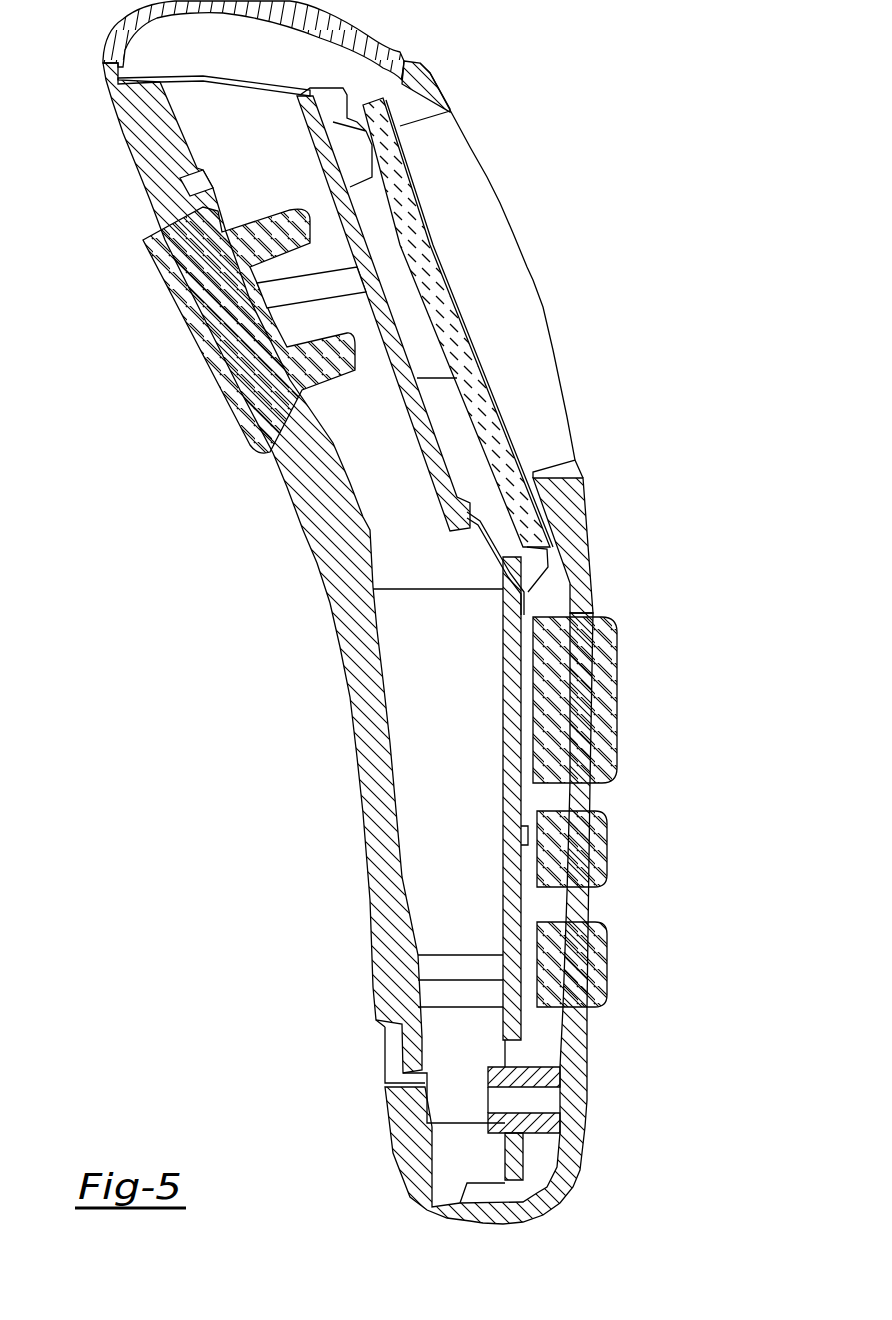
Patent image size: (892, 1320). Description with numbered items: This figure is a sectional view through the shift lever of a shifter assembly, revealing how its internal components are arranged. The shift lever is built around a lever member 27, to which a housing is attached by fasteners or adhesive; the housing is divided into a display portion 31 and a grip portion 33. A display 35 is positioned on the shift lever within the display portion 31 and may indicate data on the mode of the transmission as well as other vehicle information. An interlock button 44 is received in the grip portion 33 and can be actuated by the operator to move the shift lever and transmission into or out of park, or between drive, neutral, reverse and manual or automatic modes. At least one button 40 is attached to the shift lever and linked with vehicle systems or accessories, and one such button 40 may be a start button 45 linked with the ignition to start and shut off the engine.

The lever member 27 is at (447, 873).
The display portion 31 is at (540, 307).
The grip portion 33 is at (373, 810).
The display 35 is at (420, 236).
The button 40 is at (608, 860).
The interlock button 44 is at (197, 333).
The start button 45 is at (617, 712).